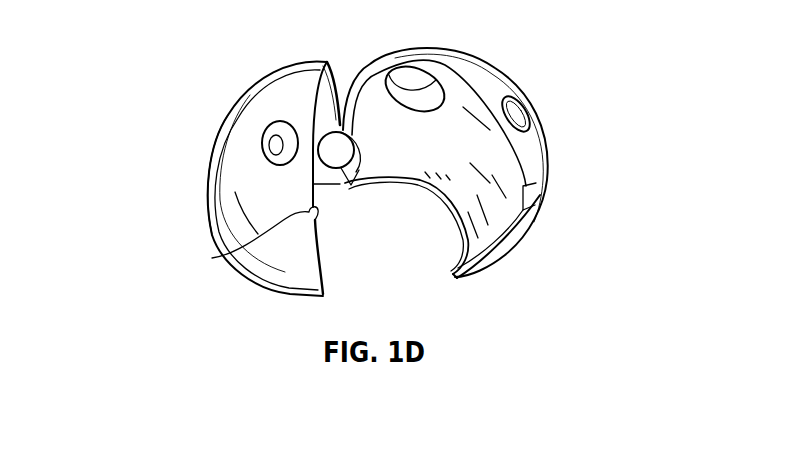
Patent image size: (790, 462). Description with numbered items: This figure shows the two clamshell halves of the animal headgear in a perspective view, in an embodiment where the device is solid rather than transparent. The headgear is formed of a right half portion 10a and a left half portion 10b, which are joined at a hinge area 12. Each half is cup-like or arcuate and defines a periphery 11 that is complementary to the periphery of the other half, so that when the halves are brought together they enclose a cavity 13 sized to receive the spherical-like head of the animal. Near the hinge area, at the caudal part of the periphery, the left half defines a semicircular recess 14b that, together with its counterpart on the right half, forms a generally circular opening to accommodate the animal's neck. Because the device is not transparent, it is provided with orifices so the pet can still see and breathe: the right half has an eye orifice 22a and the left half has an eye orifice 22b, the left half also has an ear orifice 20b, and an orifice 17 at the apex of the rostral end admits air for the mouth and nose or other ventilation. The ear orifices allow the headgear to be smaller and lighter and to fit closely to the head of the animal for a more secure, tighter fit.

The right half portion 10a is at (175, 193).
The left half portion 10b is at (590, 176).
The periphery 11 is at (328, 270).
The hinge area 12 is at (352, 172).
The cavity 13 is at (442, 185).
The semicircular recess 14b is at (458, 227).
The orifice 17 is at (236, 256).
The ear orifice 20b is at (403, 90).
The eye orifice 22a is at (270, 145).
The eye orifice 22b is at (518, 118).